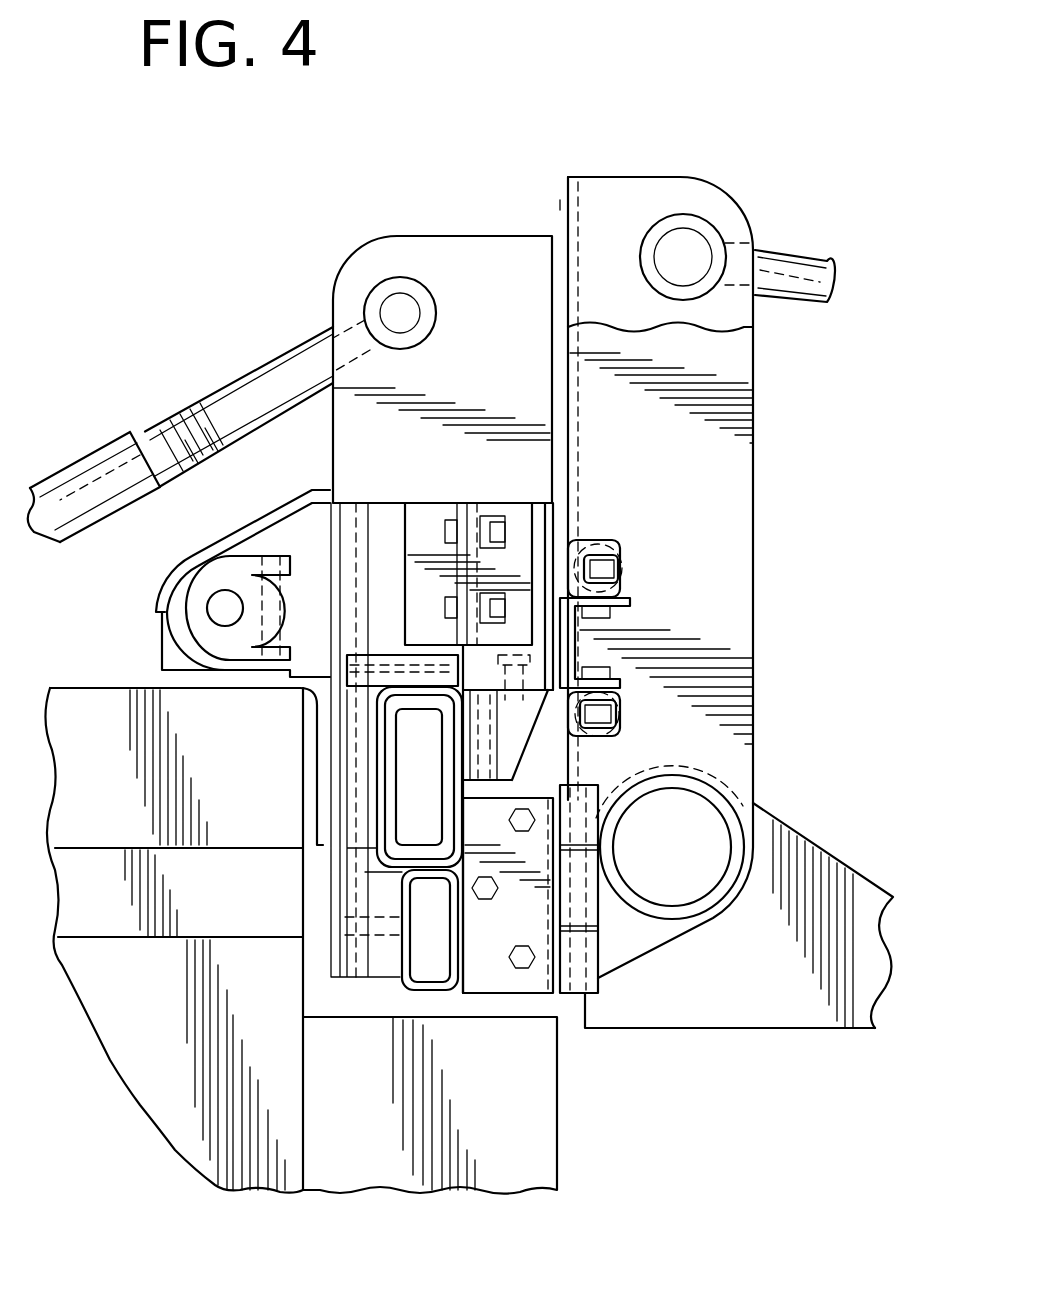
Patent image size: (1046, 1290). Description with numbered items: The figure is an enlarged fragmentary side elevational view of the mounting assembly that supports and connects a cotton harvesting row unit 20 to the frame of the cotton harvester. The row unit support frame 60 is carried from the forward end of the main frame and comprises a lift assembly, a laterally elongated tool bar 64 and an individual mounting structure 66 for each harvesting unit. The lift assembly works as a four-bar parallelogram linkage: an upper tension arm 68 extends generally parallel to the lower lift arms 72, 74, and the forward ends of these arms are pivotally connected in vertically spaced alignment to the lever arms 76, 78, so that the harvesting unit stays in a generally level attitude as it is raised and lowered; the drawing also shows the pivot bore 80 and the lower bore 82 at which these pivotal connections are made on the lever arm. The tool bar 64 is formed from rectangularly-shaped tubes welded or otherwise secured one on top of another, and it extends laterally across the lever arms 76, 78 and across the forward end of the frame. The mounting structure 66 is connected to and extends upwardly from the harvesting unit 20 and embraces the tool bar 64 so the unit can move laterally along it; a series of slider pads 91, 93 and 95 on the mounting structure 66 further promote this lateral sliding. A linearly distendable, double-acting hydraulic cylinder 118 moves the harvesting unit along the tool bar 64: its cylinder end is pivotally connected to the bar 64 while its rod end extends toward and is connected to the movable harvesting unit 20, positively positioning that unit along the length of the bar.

The cotton harvesting row unit 20 is at (148, 1006).
The row unit support frame 60 is at (547, 174).
The tool bar 64 is at (439, 991).
The mounting structure 66 is at (426, 236).
The upper tension arm 68 is at (790, 262).
The lift arm 72 is at (698, 1005).
The lift arm 74 is at (874, 893).
The lever arm 76 is at (742, 348).
The lever arm 78 is at (742, 312).
The pivot bore 80 is at (708, 232).
The bore ring 82 is at (730, 830).
The slider pad 91 is at (480, 757).
The slider pad 93 is at (410, 668).
The slider pad 95 is at (393, 945).
The hydraulic cylinder 118 is at (625, 568).